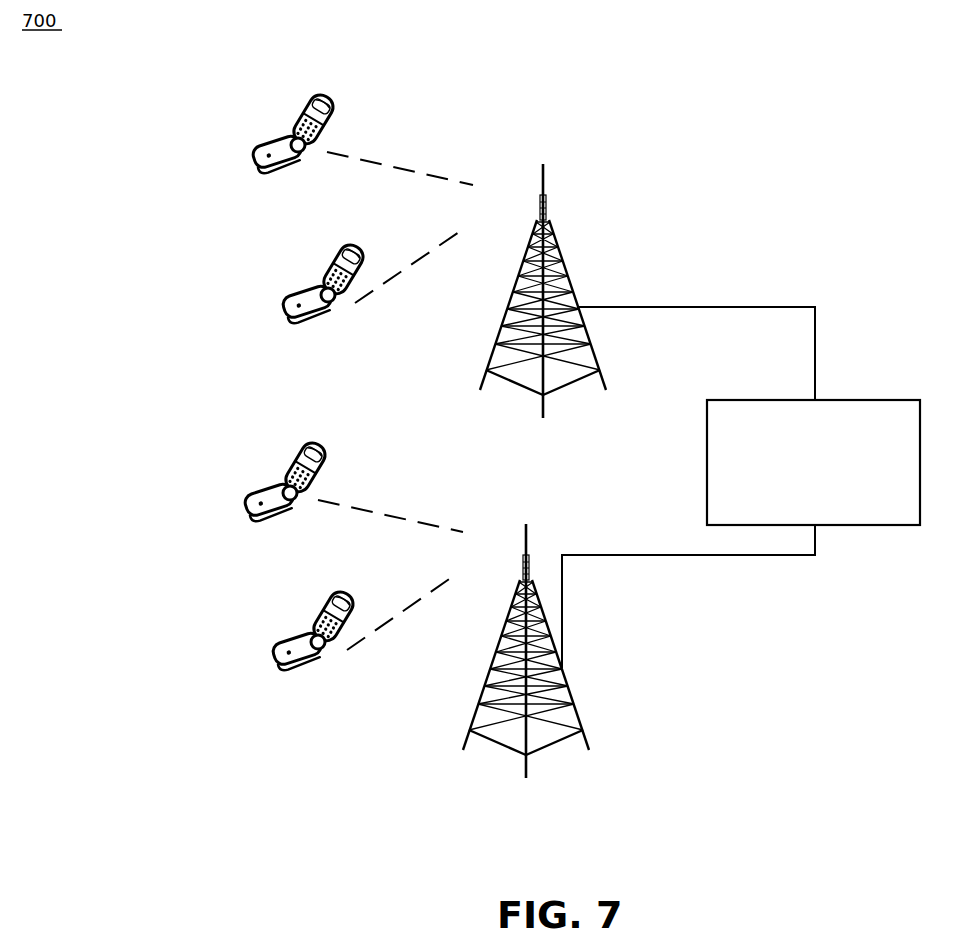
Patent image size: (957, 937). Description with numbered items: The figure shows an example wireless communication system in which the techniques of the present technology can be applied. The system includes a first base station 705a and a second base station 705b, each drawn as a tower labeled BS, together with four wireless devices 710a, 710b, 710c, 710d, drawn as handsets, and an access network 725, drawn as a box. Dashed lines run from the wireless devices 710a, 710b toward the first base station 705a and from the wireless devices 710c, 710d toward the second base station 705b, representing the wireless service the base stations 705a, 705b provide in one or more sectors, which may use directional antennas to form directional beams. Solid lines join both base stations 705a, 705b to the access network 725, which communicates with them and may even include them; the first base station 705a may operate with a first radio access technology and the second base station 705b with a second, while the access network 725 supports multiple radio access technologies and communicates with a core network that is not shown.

The first base station 705a is at (549, 245).
The second base station 705b is at (531, 565).
The wireless device 710a is at (290, 106).
The wireless device 710b is at (318, 258).
The wireless device 710c is at (280, 456).
The wireless device 710d is at (308, 604).
The access network 725 is at (718, 398).